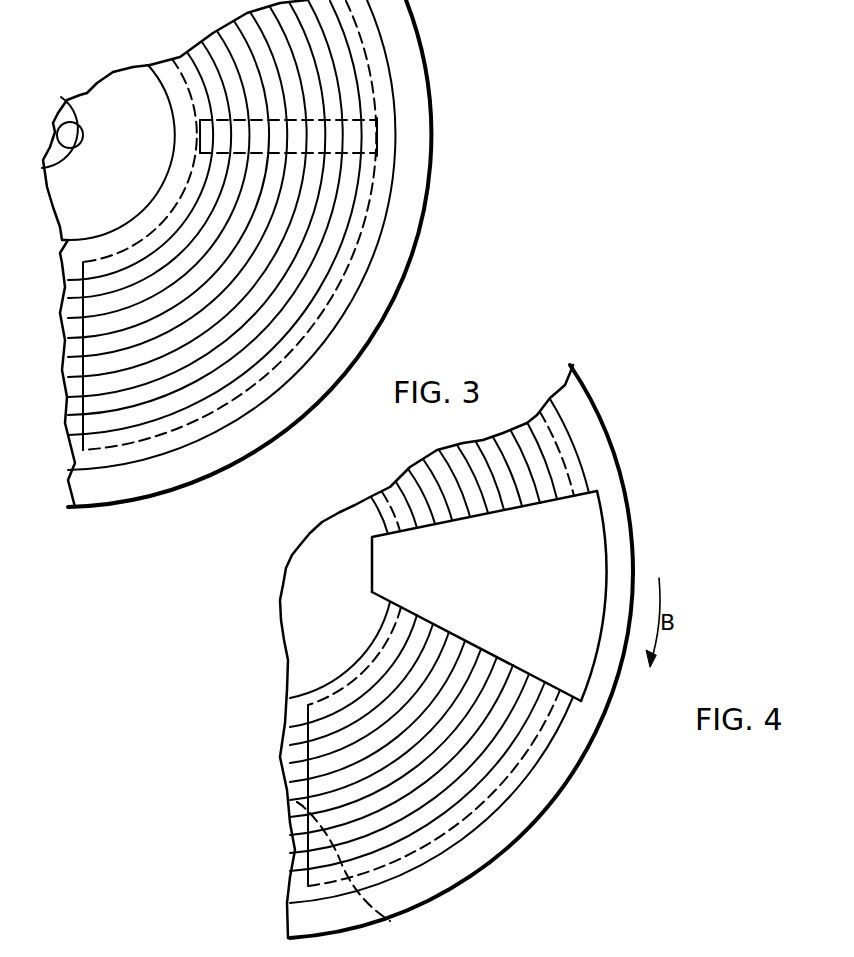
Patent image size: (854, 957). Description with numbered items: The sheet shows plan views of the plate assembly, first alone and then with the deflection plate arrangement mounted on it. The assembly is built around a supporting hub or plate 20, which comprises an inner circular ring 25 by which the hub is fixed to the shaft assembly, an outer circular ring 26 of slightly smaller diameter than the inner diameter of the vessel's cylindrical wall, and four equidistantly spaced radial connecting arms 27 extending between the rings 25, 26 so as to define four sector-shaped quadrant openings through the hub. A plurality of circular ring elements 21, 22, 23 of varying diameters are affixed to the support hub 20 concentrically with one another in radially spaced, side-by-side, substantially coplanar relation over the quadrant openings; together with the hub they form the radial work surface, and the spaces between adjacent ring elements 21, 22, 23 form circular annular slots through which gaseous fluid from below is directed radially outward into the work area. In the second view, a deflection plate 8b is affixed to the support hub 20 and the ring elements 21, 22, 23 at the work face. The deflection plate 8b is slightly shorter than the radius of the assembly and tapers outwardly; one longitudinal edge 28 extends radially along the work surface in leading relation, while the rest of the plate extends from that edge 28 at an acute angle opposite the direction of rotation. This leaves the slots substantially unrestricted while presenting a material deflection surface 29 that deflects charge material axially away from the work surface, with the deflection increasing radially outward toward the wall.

In FIG. 3, the support hub 20 is at (402, 46).
In FIG. 4, the support hub 20 is at (557, 453).
In FIG. 3, the circular ring element 21 is at (370, 245).
In FIG. 4, the circular ring element 21 is at (558, 718).
In FIG. 3, the circular ring element 22 is at (303, 255).
In FIG. 4, the circular ring element 22 is at (495, 717).
In FIG. 3, the circular ring element 23 is at (245, 280).
In FIG. 4, the circular ring element 23 is at (435, 742).
In FIG. 3, the inner circular ring 25 is at (182, 126).
In FIG. 4, the inner circular ring 25 is at (375, 641).
In FIG. 3, the outer circular ring 26 is at (312, 392).
In FIG. 4, the outer circular ring 26 is at (475, 862).
In FIG. 3, the radial connecting arm 27 is at (330, 128).
In FIG. 4, the radial connecting arm 27 is at (390, 921).
In FIG. 4, the longitudinal edge 28 is at (477, 634).
In FIG. 4, the material deflection surface 29 is at (512, 594).
In FIG. 4, the deflection plate 8b is at (590, 542).